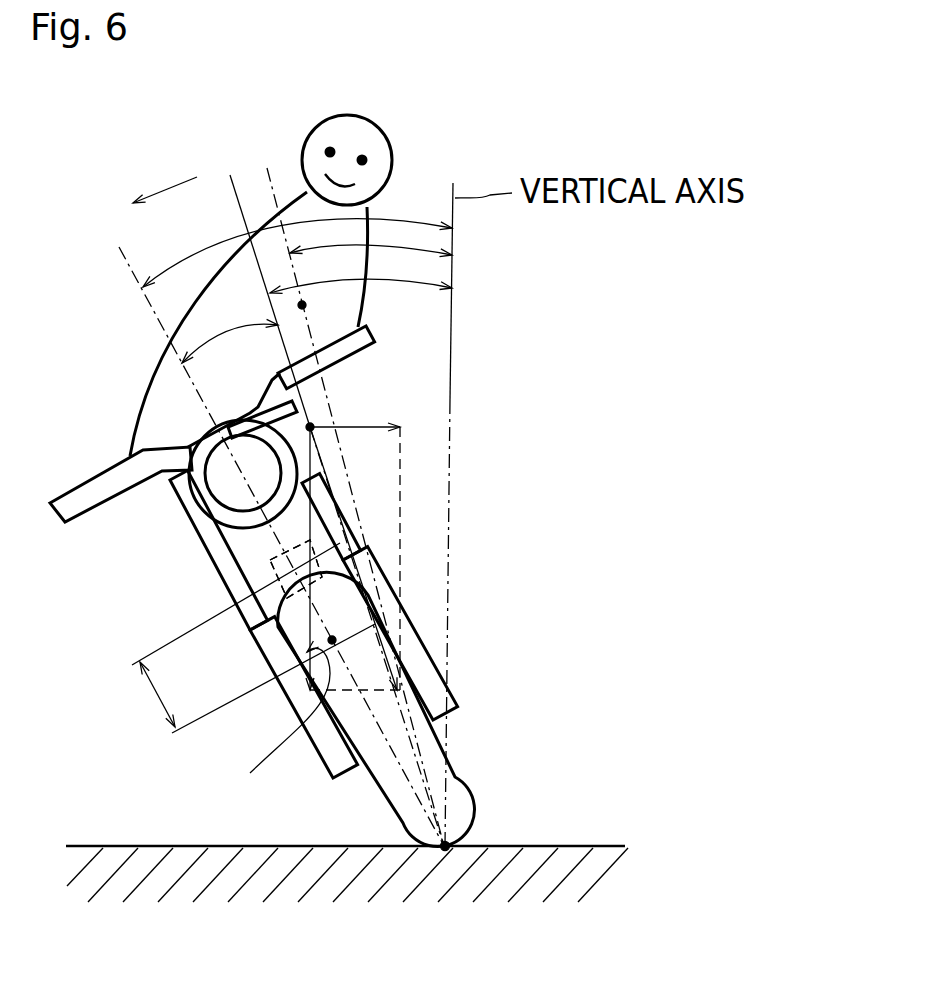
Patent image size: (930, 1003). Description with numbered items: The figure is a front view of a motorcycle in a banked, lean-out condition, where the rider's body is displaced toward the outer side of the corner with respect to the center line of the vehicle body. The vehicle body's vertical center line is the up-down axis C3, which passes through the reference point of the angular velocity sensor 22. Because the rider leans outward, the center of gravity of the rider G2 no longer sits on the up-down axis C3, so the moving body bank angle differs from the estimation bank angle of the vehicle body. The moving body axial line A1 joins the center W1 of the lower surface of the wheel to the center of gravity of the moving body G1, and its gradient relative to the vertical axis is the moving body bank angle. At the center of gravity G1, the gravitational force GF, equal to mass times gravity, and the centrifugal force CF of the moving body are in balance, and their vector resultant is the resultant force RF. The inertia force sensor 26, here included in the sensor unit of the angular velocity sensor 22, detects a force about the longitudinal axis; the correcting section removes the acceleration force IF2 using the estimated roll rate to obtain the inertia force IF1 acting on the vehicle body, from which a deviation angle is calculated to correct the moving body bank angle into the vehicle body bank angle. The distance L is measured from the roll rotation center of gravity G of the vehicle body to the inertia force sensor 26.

The up-down axis C3 is at (118, 249).
The moving body axial line A1 is at (235, 193).
The acceleration force about the longitudinal axis IF2 is at (166, 189).
The inertia force about the longitudinal axis IF1 is at (279, 723).
The center of gravity of the rider G2 is at (300, 305).
The center of gravity of the moving body G1 is at (312, 426).
The roll rotation center of gravity of the vehicle body G is at (330, 640).
The centrifugal force CF is at (377, 427).
The resultant force RF is at (350, 550).
The gravitational force GF is at (312, 507).
The angular velocity sensor 22 is at (273, 563).
The inertia force sensor 26 is at (206, 593).
The distance from roll rotation center of gravity to inertia force sensor L is at (155, 697).
The center of the lower surface of the wheel W1 is at (445, 846).